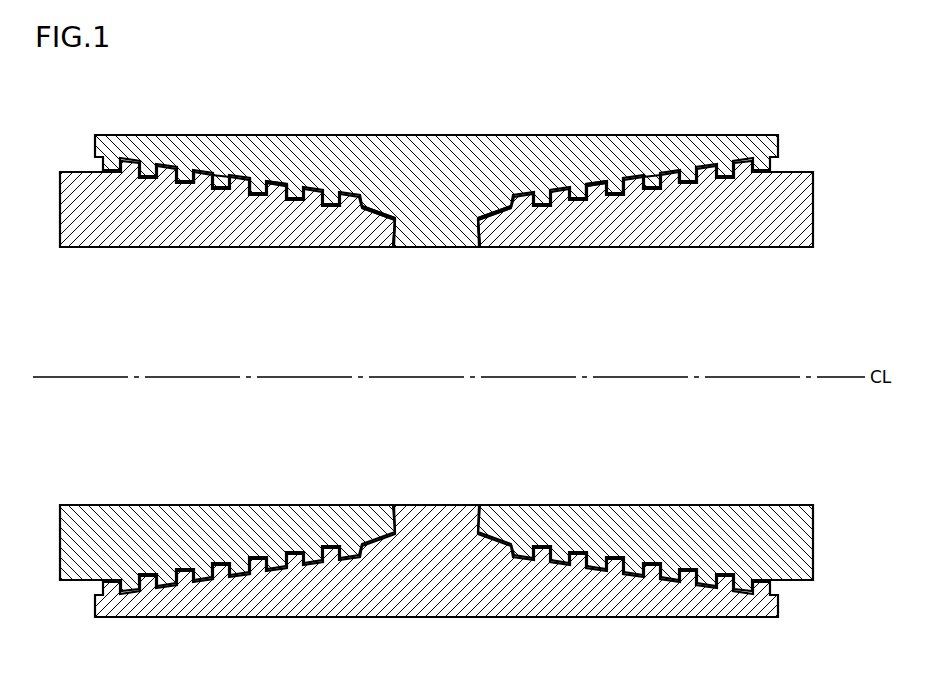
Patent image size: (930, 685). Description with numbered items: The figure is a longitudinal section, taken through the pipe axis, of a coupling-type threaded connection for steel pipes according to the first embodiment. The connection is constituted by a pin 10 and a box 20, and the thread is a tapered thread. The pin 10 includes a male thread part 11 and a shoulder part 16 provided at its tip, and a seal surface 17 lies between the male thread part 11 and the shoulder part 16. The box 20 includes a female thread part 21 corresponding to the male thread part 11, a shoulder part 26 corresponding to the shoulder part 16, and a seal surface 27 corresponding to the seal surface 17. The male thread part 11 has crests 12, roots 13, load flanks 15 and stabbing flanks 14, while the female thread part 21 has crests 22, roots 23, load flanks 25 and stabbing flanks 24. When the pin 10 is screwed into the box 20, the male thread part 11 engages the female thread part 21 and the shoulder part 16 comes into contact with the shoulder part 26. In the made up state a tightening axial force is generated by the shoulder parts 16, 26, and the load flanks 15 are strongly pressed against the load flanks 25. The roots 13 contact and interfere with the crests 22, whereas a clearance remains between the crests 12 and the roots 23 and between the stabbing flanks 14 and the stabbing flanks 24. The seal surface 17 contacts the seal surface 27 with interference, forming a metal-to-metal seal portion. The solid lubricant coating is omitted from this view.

The pin 10 is at (95, 262).
The male thread part 11 is at (162, 215).
The crests 12 is at (273, 190).
The roots 13 is at (227, 183).
The stabbing flanks 14 is at (197, 187).
The load flanks 15 is at (247, 200).
The shoulder part 16 is at (385, 225).
The seal surface 17 is at (372, 240).
The box 20 is at (766, 129).
The female thread part 21 is at (178, 160).
The crests 22 is at (296, 170).
The roots 23 is at (277, 183).
The stabbing flanks 24 is at (257, 180).
The load flanks 25 is at (226, 184).
The shoulder part 26 is at (400, 247).
The seal surface 27 is at (378, 212).